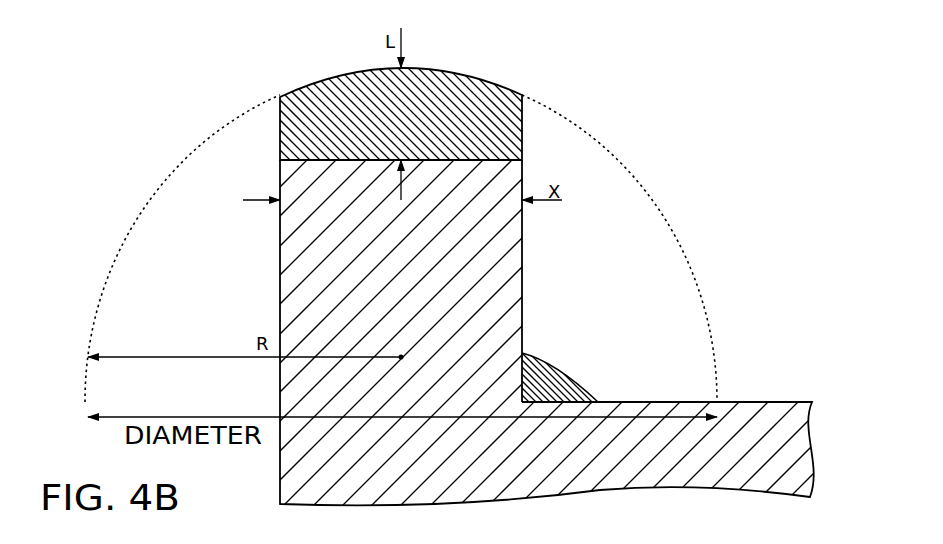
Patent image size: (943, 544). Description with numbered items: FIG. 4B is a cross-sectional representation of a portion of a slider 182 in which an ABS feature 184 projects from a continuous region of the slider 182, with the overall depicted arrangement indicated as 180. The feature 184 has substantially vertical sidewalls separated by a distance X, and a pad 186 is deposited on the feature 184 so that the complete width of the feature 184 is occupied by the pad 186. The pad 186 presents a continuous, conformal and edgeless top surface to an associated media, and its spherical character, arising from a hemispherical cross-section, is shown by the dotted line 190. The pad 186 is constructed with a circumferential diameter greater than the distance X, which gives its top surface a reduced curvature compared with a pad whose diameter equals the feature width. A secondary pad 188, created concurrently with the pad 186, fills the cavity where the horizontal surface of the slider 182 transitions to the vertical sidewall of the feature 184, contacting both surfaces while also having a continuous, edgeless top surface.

The microstructure 180 is at (706, 57).
The slider 182 is at (750, 400).
The ABS feature 184 is at (280, 272).
The pad 186 is at (477, 72).
The secondary pad 188 is at (555, 368).
The dotted line 190 is at (203, 143).